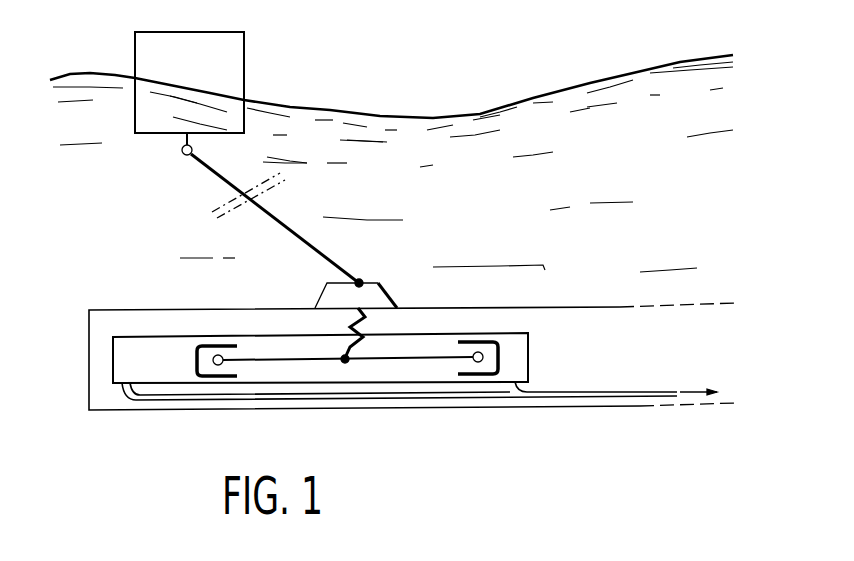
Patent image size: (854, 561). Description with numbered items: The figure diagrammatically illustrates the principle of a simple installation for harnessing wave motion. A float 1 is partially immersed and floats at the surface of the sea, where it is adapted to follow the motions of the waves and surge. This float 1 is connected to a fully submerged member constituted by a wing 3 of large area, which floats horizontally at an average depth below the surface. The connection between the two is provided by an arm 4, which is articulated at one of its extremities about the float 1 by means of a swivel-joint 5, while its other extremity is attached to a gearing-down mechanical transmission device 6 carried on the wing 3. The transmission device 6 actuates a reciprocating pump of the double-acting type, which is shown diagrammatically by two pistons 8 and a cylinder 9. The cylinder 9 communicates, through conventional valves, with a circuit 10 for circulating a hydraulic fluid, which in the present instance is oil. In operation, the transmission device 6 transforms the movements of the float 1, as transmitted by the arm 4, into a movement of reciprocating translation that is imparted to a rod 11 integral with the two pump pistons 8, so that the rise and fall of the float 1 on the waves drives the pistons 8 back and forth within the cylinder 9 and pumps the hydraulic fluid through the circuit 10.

The float 1 is at (226, 57).
The wing 3 is at (177, 310).
The arm 4 is at (290, 228).
The swivel-joint 5 is at (182, 151).
The gearing-down mechanical transmission device 6 is at (383, 287).
The pistons 8 is at (498, 342).
The cylinder 9 is at (532, 365).
The circuit 10 is at (645, 392).
The rod 11 is at (268, 356).